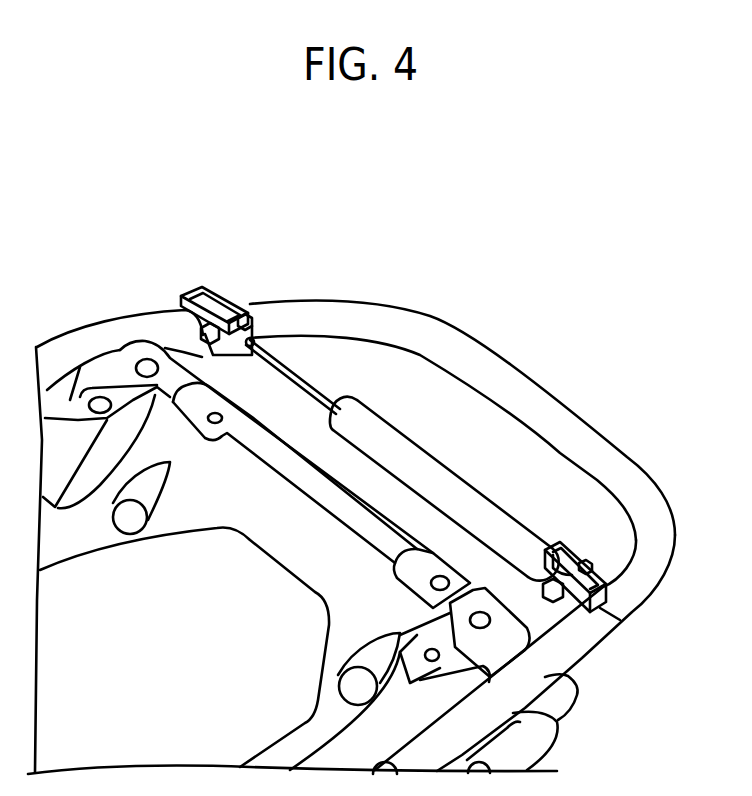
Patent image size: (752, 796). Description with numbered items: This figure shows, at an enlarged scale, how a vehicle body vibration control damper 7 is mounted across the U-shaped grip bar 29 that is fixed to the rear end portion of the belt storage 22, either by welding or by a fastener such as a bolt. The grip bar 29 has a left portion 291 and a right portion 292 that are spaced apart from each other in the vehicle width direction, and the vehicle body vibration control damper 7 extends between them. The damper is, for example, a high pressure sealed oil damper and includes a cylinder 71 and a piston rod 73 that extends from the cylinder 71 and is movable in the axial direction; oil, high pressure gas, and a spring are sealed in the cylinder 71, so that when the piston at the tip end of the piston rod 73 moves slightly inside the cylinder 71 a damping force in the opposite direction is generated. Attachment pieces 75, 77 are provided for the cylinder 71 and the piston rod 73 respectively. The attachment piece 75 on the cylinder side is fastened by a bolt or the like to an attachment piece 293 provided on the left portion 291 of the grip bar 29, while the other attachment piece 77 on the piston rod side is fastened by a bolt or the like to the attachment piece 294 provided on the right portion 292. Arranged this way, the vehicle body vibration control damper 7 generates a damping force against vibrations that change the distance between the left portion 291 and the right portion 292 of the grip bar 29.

The vehicle body vibration control damper 7 is at (393, 426).
The belt storage 22 is at (158, 440).
The grip bar 29 is at (371, 512).
The cylinder 71 is at (448, 495).
The piston rod 73 is at (300, 383).
The attachment piece 75 is at (555, 550).
The attachment piece 77 is at (276, 333).
The left portion 291 is at (577, 638).
The right portion 292 is at (152, 325).
The attachment piece 293 is at (607, 612).
The attachment piece 294 is at (206, 298).